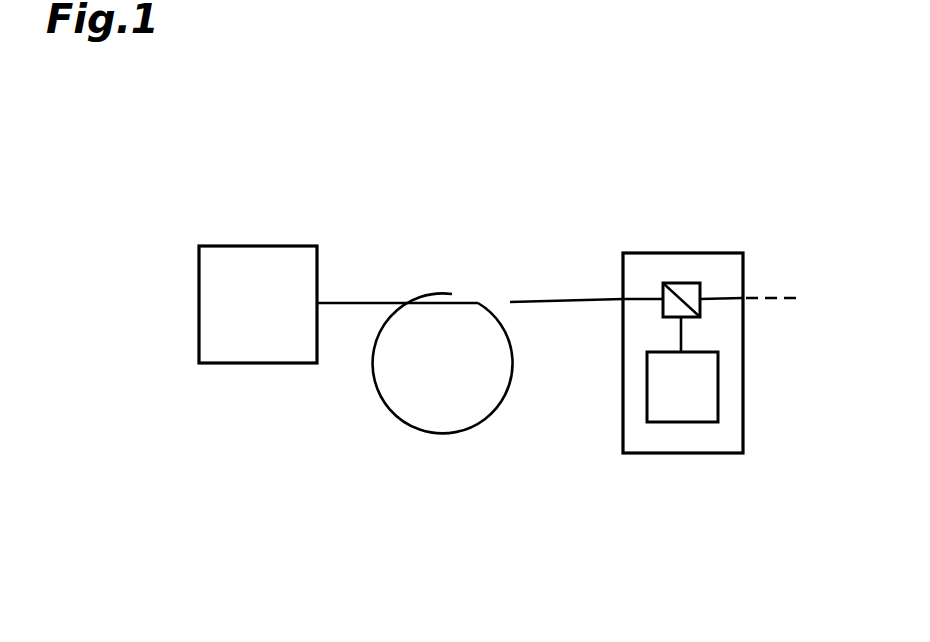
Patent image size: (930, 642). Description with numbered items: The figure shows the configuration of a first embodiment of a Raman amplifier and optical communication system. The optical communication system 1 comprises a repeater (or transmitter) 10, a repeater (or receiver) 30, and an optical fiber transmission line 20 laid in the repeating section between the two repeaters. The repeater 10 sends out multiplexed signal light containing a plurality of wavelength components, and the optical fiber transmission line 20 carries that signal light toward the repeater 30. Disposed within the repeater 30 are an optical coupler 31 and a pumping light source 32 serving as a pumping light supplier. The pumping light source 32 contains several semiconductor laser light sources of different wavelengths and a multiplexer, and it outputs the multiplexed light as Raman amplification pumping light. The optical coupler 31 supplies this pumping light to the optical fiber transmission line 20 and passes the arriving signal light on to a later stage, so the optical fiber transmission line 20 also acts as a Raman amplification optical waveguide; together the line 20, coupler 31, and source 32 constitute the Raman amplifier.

The optical communication system 1 is at (614, 134).
The repeater (or transmitter) 10 is at (259, 246).
The optical fiber transmission line 20 is at (430, 178).
The repeater (or receiver) 30 is at (716, 253).
The optical coupler 31 is at (684, 283).
The pumping light source 32 is at (647, 380).